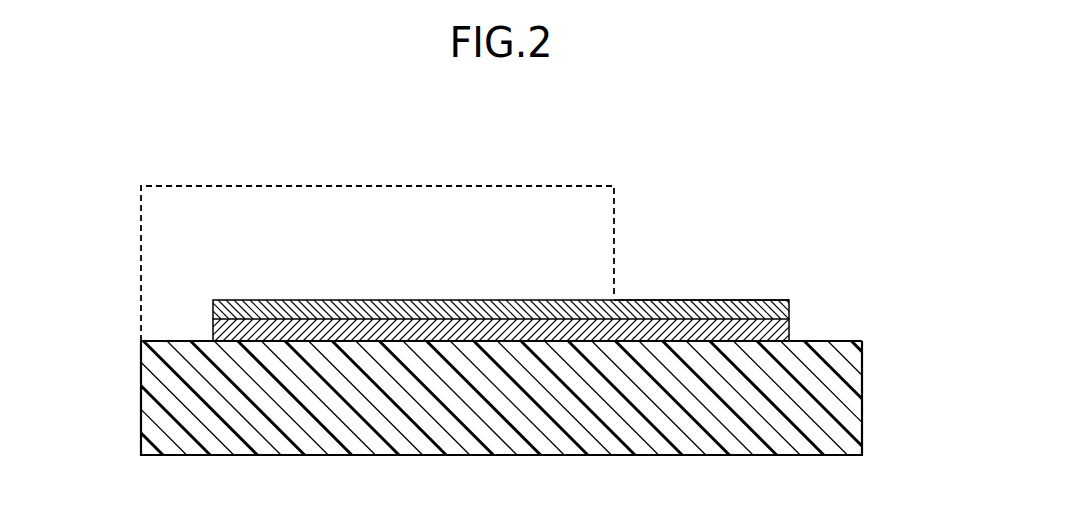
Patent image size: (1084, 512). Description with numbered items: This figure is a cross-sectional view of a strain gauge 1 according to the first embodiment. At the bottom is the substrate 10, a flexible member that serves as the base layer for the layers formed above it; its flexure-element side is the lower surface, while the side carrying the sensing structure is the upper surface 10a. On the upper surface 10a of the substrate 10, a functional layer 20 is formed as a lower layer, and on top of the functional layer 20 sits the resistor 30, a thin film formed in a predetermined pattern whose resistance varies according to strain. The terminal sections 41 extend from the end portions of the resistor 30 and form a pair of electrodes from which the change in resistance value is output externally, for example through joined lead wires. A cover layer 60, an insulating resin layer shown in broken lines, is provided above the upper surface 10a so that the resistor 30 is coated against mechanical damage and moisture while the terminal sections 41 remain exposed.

The strain gauge 1 is at (59, 158).
The substrate 10 is at (160, 388).
The upper surface of the substrate 10a is at (176, 341).
The functional layer 20 is at (213, 330).
The resistor 30 is at (608, 290).
The terminal sections 41 is at (622, 292).
The cover layer 60 is at (488, 184).